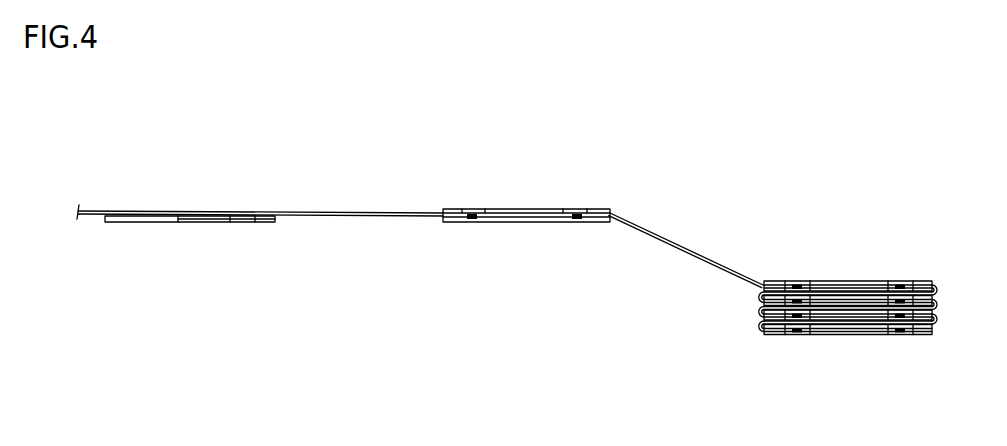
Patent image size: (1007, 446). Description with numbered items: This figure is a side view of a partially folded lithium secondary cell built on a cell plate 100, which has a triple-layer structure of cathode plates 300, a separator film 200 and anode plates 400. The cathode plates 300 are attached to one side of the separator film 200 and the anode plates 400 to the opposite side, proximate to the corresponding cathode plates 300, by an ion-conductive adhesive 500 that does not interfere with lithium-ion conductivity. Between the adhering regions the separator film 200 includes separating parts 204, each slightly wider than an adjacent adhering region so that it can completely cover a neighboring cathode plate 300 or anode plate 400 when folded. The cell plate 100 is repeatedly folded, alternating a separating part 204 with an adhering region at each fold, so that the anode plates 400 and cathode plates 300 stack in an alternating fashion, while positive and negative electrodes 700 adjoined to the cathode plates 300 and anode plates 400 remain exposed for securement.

The cell plate 100 is at (327, 380).
The separator film 200 is at (343, 205).
The separating part 204 is at (380, 217).
The cathode plate 300 is at (538, 209).
The anode plate 400 is at (180, 222).
The ion-conductive adhesive 500 is at (800, 281).
The electrode 700 is at (473, 209).